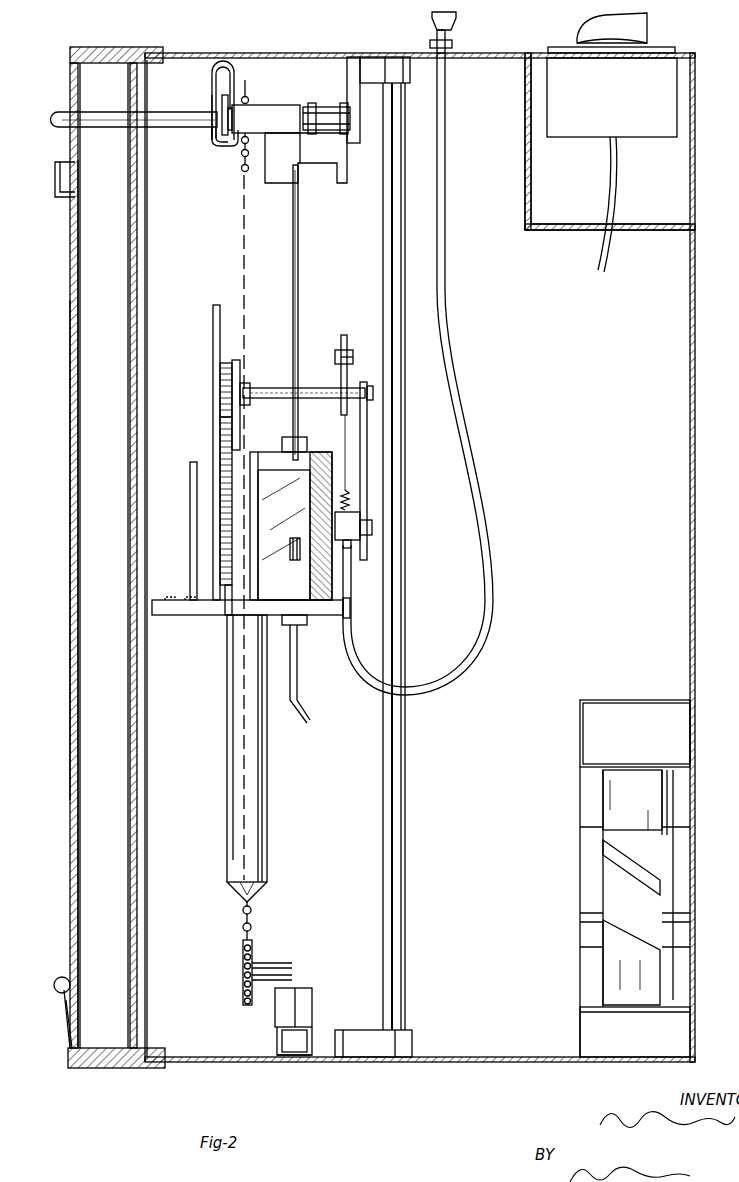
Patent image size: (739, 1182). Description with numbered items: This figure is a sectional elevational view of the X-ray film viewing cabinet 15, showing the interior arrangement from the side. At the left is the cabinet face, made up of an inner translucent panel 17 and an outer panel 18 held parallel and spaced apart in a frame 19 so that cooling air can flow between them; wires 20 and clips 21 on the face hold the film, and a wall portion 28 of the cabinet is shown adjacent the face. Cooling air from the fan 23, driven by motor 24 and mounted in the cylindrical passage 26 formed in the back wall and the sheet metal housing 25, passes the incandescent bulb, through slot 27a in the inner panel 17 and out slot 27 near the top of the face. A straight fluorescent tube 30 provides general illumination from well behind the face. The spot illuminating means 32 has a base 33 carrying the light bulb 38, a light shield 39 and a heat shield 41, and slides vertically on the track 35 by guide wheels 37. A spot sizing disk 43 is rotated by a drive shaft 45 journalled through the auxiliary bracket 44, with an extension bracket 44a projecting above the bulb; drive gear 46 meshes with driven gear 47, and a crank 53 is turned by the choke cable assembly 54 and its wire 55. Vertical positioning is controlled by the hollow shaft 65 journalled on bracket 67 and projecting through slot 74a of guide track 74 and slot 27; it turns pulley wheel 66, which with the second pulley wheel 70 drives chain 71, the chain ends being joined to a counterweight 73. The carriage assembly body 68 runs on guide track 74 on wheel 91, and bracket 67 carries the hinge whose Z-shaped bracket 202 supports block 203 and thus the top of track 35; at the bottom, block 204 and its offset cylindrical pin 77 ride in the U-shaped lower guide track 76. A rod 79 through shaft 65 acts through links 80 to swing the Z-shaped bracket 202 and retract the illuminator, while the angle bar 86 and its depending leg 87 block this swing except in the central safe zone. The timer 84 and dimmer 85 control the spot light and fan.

The cabinet 15 is at (197, 1070).
The inner translucent panel 17 is at (137, 894).
The outer panel 18 is at (89, 604).
The frame 19 is at (108, 1068).
The wires 20 is at (70, 460).
The clips 21 is at (60, 977).
The fan 23 is at (610, 802).
The motor 24 is at (588, 891).
The sheet metal housing 25 is at (580, 702).
The cylindrical passage 26 is at (584, 764).
The slot 27 is at (66, 76).
The slot in inner panel 27a is at (128, 142).
The frame wall 28 is at (150, 1036).
The fluorescent tube 30 is at (406, 948).
The spot illuminating means 32 is at (200, 675).
The base 33 is at (198, 618).
The track 35 is at (298, 279).
The guide wheels 37 is at (292, 538).
The light bulb 38 is at (272, 445).
The light shield 39 is at (228, 595).
The heat shield 41 is at (190, 482).
The spot sizing disk 43 is at (212, 320).
The auxiliary bracket 44 is at (328, 535).
The extension bracket 44a is at (367, 482).
The sizing disk drive shaft 45 is at (282, 386).
The drive gear 46 is at (222, 380).
The driven gear 47 is at (220, 455).
The crank 53 is at (338, 350).
The choke cable assembly 54 is at (451, 421).
The wire 55 is at (344, 434).
The shaft 65 is at (220, 106).
The pulley wheel 66 is at (249, 99).
The bracket 67 is at (303, 104).
The carriage assembly body 68 is at (236, 95).
The second pulley wheel 70 is at (243, 980).
The chain 71 is at (251, 912).
The counterweight 73 is at (227, 838).
The guide track 74 is at (242, 143).
The slot 74a is at (212, 100).
The lower guide track 76 is at (314, 1055).
The offset cylindrical pin 77 is at (290, 1040).
The rod 79 is at (66, 108).
The links 80 is at (341, 106).
The timer 84 is at (580, 31).
The dimmer 85 is at (598, 140).
The angle bar 86 is at (384, 66).
The depending leg 87 is at (365, 125).
The wheel 91 is at (214, 143).
The Z-shaped bracket 202 is at (348, 180).
The block 203 is at (296, 182).
The block 204 is at (314, 996).